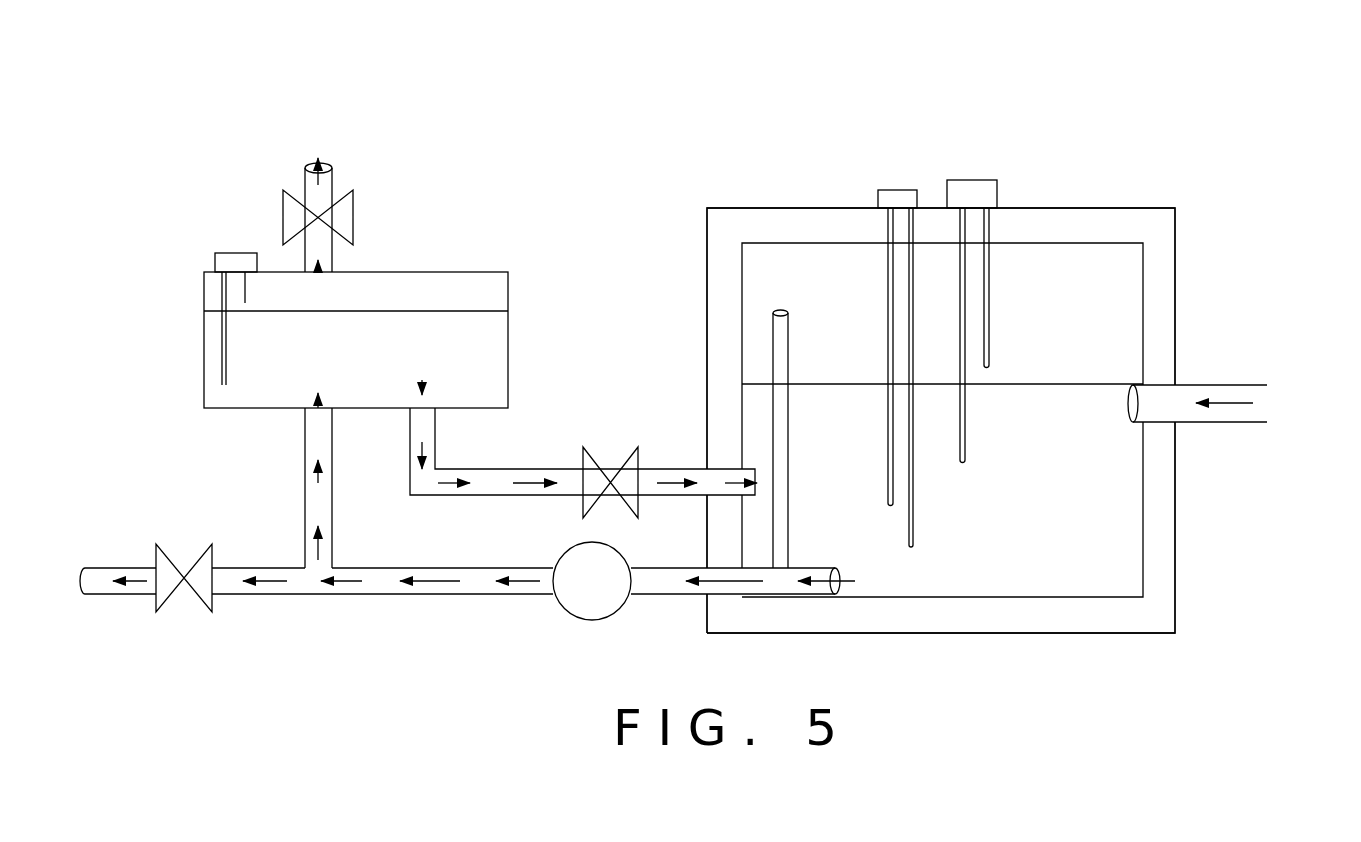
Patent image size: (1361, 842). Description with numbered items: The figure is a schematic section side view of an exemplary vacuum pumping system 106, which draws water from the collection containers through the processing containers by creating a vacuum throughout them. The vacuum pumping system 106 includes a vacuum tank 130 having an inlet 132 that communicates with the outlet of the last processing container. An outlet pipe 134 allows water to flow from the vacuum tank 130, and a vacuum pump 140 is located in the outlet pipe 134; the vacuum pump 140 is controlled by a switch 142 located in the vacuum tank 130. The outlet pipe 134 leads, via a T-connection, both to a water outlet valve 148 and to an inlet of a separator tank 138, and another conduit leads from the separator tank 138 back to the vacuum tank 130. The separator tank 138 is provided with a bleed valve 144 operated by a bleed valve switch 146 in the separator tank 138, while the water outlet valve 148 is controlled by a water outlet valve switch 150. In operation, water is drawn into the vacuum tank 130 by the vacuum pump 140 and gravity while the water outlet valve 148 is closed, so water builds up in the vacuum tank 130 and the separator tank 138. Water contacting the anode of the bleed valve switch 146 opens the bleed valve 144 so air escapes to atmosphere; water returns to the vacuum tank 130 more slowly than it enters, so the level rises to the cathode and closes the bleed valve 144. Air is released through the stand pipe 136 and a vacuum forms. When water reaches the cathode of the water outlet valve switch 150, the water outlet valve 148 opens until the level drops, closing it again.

The vacuum pumping system 106 is at (1152, 132).
The vacuum tank 130 is at (1175, 589).
The inlet 132 is at (1255, 403).
The outlet pipe 134 is at (432, 594).
The stand pipe 136 is at (769, 336).
The separator tank 138 is at (508, 347).
The vacuum pump 140 is at (613, 614).
The switch 142 is at (907, 190).
The bleed valve 144 is at (353, 191).
The bleed valve switch 146 is at (224, 252).
The water outlet valve 148 is at (205, 612).
The water outlet valve switch 150 is at (977, 180).